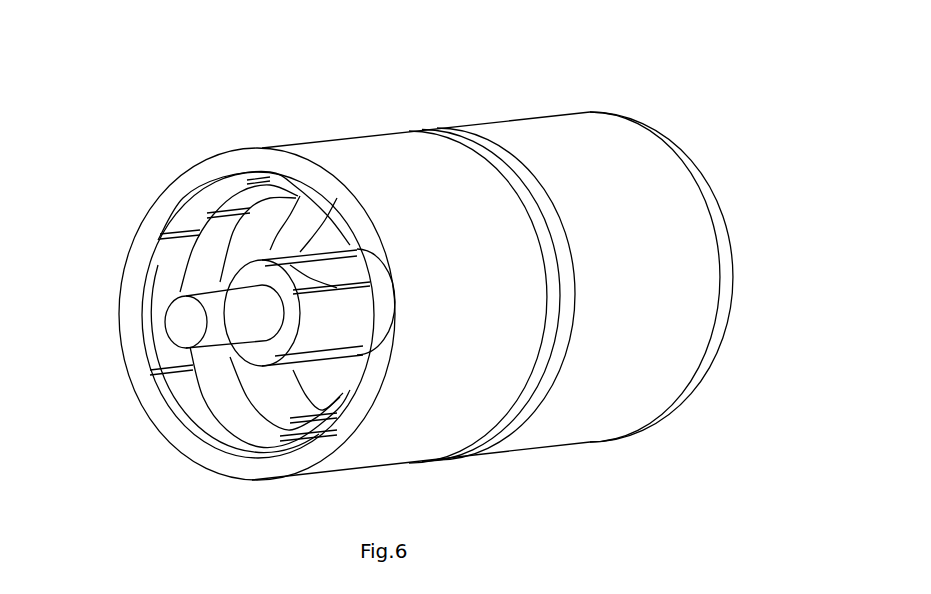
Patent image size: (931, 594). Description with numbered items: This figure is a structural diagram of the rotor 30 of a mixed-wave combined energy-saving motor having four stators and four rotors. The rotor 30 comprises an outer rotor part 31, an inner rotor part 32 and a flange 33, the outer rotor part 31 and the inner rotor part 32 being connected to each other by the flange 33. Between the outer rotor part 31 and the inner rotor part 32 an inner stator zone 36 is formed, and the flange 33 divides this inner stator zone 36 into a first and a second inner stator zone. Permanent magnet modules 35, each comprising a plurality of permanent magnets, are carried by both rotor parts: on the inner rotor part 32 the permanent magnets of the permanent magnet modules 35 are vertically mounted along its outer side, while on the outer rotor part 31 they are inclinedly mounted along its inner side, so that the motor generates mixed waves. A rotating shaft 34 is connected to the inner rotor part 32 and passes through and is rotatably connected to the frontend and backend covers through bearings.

The rotor 30 is at (244, 82).
The outer rotor part 31 is at (393, 168).
The inner rotor part 32 is at (278, 291).
The flange 33 is at (541, 234).
The rotating shaft 34 is at (220, 313).
The permanent magnet modules 35 is at (303, 275).
The inner stator zone 36 is at (328, 242).